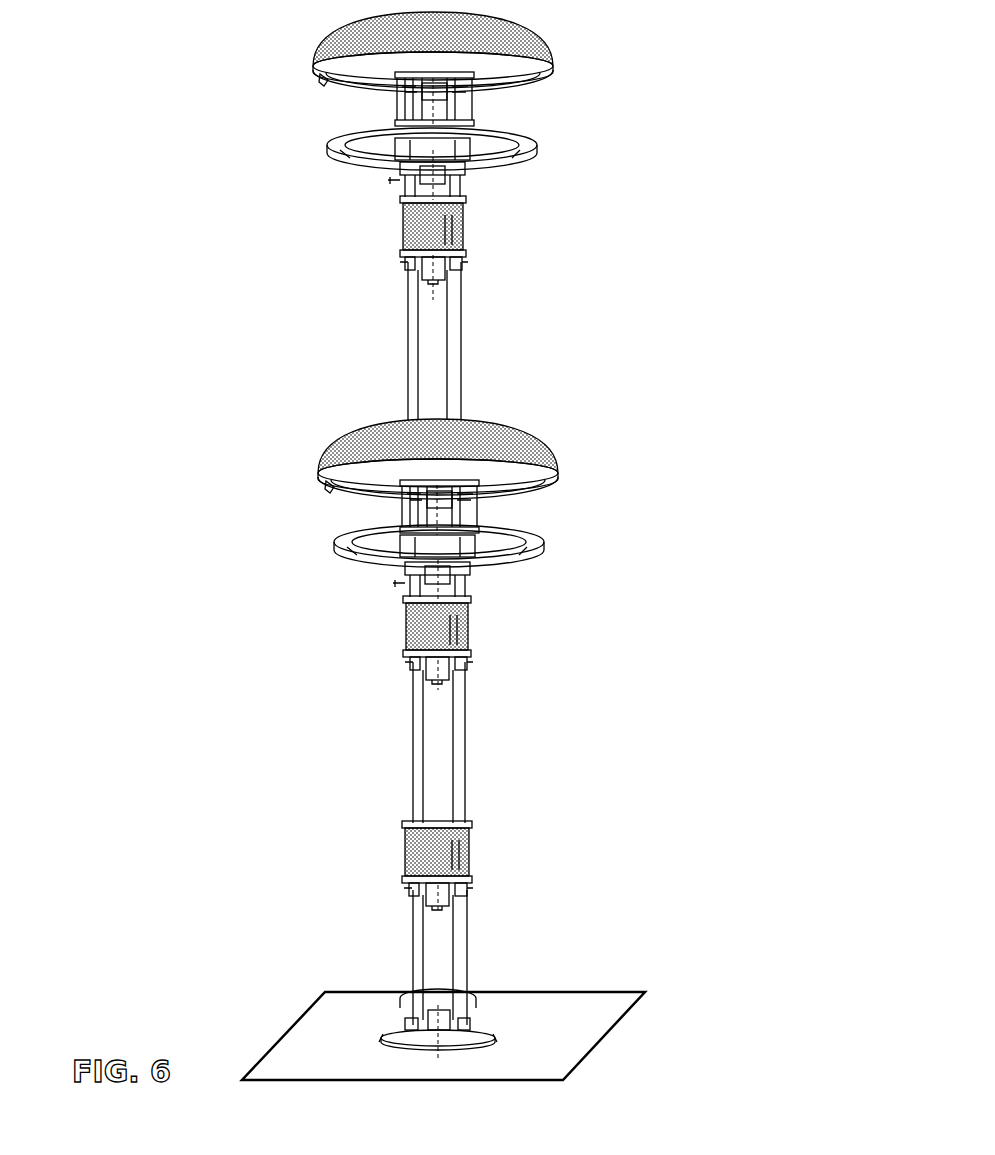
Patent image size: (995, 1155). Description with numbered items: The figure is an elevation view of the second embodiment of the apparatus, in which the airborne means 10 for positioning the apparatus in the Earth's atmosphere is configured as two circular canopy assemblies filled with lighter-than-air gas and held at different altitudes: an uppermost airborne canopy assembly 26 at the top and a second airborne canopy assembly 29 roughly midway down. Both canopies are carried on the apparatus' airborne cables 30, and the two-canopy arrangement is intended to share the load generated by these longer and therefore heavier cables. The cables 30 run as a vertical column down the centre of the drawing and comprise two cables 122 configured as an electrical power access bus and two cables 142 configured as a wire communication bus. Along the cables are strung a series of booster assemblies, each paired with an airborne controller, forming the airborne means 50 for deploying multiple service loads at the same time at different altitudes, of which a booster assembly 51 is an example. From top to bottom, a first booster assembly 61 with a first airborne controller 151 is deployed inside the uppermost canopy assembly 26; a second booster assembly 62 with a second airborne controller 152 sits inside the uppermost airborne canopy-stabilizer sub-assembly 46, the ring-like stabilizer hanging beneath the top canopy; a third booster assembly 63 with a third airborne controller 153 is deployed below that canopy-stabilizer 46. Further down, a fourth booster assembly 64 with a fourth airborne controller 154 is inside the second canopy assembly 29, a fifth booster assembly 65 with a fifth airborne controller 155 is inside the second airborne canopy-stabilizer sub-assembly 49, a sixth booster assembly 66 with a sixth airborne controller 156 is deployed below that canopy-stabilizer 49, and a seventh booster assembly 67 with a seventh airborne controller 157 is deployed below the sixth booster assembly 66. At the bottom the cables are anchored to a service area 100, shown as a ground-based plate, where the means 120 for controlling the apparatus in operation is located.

The airborne means for positioning the apparatus 10 is at (547, 55).
The uppermost airborne canopy assembly 26 is at (333, 32).
The first booster assembly 61 is at (395, 97).
The first airborne controller 151 is at (332, 134).
The uppermost airborne canopy-stabilizer sub-assembly 46 is at (333, 152).
The second booster assembly 62 is at (400, 172).
The second airborne controller 152 is at (400, 192).
The second airborne canopy assembly 29 is at (357, 433).
The booster assembly 51 is at (462, 223).
The third booster assembly 63 is at (462, 238).
The third airborne controller 153 is at (462, 278).
The airborne cables 30 is at (462, 367).
The fourth booster assembly 64 is at (319, 474).
The fourth airborne controller 154 is at (400, 505).
The second airborne canopy-stabilizer sub-assembly 49 is at (334, 542).
The fifth booster assembly 65 is at (400, 568).
The fifth airborne controller 155 is at (403, 583).
The airborne means for deploying service loads 50 is at (468, 612).
The sixth booster assembly 66 is at (470, 633).
The sixth airborne controller 156 is at (467, 675).
The cables configured as a wire communication bus 142 is at (413, 722).
The cables configured as an electrical power access bus 122 is at (413, 768).
The seventh booster assembly 67 is at (404, 868).
The seventh airborne controller 157 is at (418, 908).
The means for controlling the apparatus 120 is at (470, 1030).
The service area 100 is at (577, 1028).